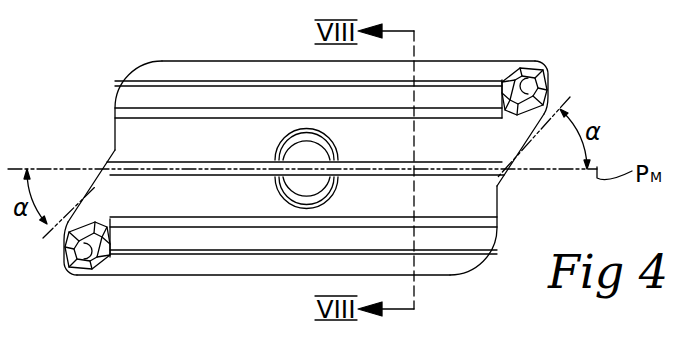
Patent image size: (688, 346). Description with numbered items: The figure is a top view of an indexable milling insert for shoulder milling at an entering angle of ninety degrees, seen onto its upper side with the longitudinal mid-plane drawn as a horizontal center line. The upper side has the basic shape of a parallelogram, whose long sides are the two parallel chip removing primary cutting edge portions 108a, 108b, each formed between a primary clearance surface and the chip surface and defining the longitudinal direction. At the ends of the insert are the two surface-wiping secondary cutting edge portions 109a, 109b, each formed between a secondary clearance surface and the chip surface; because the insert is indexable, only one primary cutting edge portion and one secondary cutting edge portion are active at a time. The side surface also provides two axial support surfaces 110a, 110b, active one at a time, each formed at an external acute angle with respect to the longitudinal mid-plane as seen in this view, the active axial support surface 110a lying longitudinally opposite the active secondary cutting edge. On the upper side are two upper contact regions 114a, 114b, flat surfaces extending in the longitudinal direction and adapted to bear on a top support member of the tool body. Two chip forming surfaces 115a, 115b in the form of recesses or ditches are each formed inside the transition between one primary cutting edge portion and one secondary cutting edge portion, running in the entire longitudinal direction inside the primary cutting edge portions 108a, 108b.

The primary cutting edge portion 108a is at (165, 277).
The primary cutting edge portion 108b is at (465, 58).
The secondary cutting edge portion 109a is at (76, 246).
The secondary cutting edge portion 109b is at (549, 88).
The axial support surface 110a is at (534, 143).
The axial support surface 110b is at (92, 187).
The upper contact region 114a is at (437, 153).
The upper contact region 114b is at (437, 208).
The chip forming surface 115a is at (82, 246).
The chip forming surface 115b is at (528, 86).